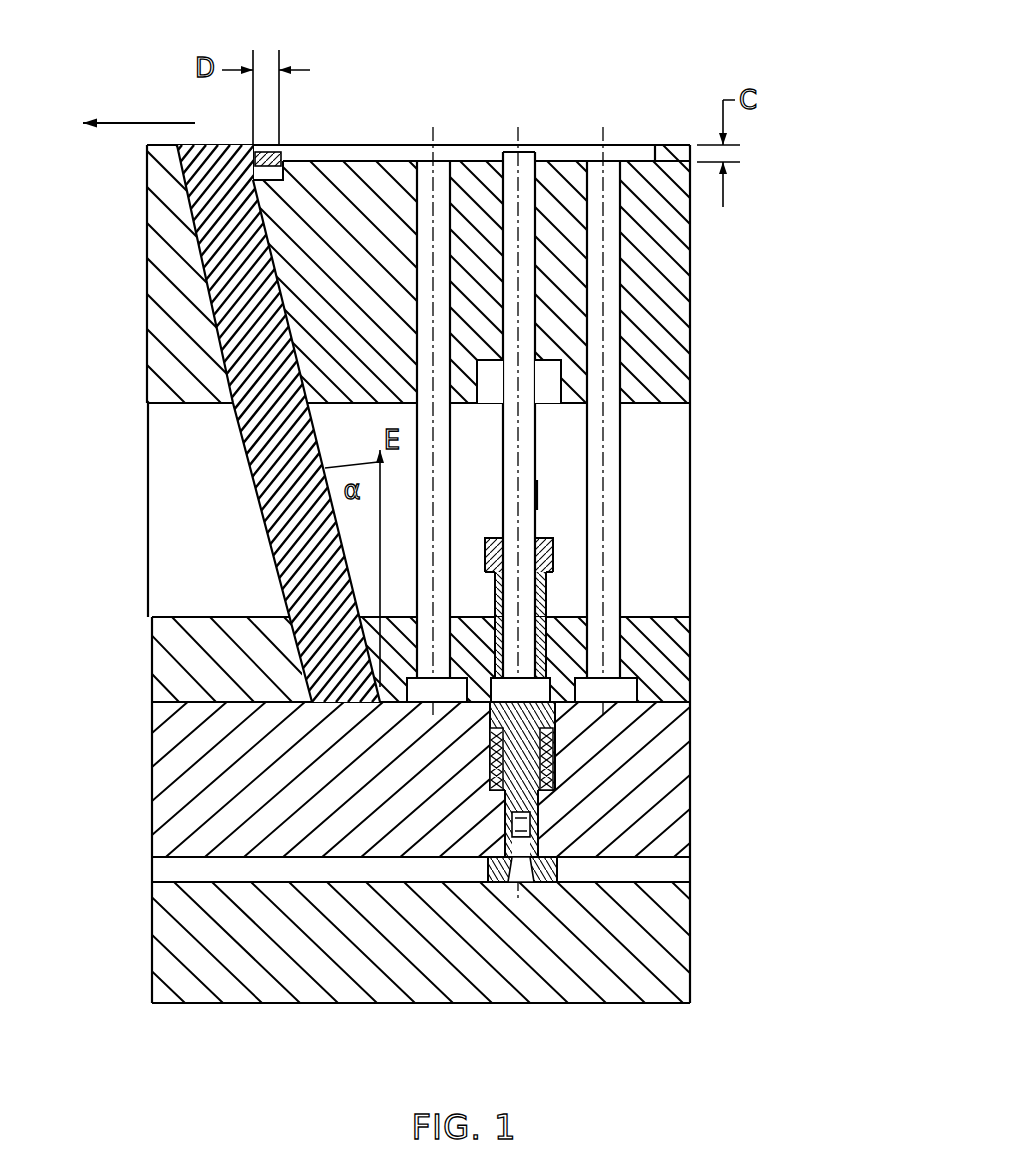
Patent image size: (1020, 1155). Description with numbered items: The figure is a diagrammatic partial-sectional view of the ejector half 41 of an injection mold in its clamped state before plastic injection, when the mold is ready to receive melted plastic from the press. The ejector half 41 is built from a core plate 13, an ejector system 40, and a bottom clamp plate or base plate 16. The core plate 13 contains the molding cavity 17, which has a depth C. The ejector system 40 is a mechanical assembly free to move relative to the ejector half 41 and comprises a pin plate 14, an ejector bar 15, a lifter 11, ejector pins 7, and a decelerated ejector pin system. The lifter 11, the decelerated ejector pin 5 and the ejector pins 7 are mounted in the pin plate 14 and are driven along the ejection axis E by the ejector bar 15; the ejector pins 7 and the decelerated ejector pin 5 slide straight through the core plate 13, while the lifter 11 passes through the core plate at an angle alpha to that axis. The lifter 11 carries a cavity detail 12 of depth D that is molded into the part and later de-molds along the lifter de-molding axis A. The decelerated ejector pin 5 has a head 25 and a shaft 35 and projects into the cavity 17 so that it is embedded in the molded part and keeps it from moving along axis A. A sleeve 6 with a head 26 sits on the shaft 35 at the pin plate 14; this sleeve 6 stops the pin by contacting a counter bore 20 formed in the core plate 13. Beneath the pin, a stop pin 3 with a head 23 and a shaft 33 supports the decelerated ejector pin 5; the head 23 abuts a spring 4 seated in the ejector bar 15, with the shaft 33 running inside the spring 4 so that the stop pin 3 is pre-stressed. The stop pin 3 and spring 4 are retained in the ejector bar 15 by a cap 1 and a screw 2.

The cap 1 is at (490, 880).
The screw 2 is at (518, 893).
The stop pin 3 is at (553, 813).
The spring 4 is at (557, 757).
The decelerated ejector pin 5 is at (537, 462).
The sleeve 6 is at (548, 595).
The ejector pins 7 is at (622, 512).
The lifter 11 is at (250, 478).
The cavity detail 12 is at (283, 147).
The core plate 13 is at (147, 318).
The pin plate 14 is at (152, 660).
The ejector bar 15 is at (152, 790).
The base plate 16 is at (152, 938).
The molding cavity 17 is at (607, 158).
The counter bore 20 is at (555, 358).
The head 23 is at (553, 721).
The head 25 is at (552, 692).
The head 26 is at (555, 553).
The shaft 33 is at (553, 828).
The shaft 35 is at (537, 494).
The ejector system 40 is at (460, 584).
The ejector half 41 is at (177, 107).